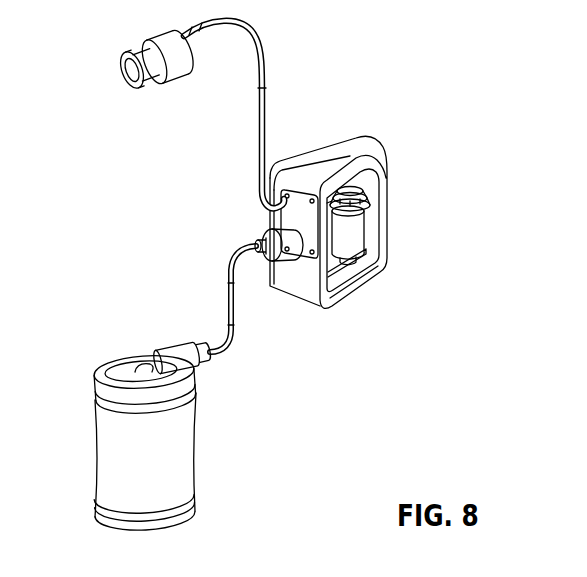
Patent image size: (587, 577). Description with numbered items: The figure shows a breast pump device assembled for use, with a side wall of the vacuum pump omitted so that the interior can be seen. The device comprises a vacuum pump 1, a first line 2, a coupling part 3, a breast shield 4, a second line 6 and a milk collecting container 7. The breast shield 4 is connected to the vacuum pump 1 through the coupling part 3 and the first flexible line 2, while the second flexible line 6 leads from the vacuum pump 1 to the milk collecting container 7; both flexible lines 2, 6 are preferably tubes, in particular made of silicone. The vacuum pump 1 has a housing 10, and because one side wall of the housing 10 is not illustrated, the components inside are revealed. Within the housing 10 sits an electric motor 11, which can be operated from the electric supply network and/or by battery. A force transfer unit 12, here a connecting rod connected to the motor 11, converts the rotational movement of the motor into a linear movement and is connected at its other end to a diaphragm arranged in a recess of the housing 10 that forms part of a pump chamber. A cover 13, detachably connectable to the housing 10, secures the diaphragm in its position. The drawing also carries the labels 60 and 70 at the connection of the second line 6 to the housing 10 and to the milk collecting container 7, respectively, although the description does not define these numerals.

The vacuum pump 1 is at (358, 108).
The first line 2 is at (267, 97).
The coupling part 3 is at (176, 62).
The breast shield 4 is at (140, 87).
The second line 6 is at (229, 296).
The milk collecting container 7 is at (113, 453).
The housing 10 is at (361, 137).
The electric motor 11 is at (366, 236).
The force transfer unit 12 is at (368, 196).
The cover 13 is at (268, 207).
The connector 60 is at (278, 261).
The canister coupling 70 is at (158, 349).